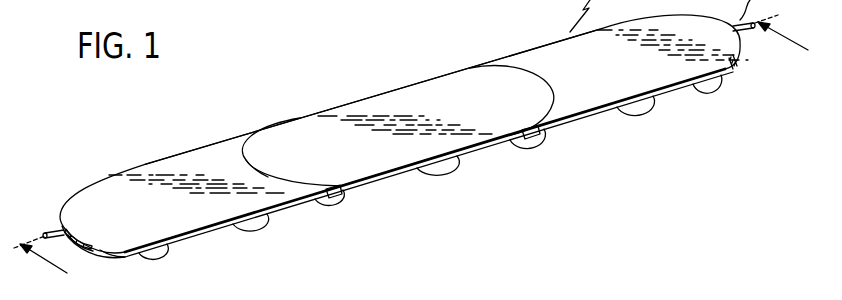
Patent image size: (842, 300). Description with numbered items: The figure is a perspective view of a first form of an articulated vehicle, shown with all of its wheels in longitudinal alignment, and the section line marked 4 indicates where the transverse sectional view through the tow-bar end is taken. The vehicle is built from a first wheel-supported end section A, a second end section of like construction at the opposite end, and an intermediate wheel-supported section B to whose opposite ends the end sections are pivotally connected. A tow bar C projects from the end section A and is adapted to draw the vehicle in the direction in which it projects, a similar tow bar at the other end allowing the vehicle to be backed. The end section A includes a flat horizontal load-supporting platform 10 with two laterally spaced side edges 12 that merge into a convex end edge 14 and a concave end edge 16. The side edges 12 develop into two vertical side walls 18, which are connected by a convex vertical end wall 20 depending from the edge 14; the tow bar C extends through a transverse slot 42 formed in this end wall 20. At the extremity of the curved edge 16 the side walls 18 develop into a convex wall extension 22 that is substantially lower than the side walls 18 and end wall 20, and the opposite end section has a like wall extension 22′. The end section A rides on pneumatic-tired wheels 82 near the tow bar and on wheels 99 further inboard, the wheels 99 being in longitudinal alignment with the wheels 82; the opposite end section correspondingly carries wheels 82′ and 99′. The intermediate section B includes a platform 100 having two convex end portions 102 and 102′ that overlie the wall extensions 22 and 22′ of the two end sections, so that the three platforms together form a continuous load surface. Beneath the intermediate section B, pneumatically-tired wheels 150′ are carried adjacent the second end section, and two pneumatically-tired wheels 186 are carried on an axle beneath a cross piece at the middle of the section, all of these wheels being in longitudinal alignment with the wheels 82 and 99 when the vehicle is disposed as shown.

The load-supporting platform 10 is at (161, 212).
The side edges 12 is at (150, 163).
The convex end edge 14 is at (80, 231).
The concave end edge 16 is at (244, 160).
The side walls 18 is at (197, 234).
The convex vertical end wall 20 is at (91, 249).
The convex wall extension 22 is at (330, 206).
The convex wall extension 22′ is at (533, 141).
The transverse slot 42 is at (92, 245).
The pneumatic-tired wheels 82 is at (160, 257).
The pneumatic-tired wheels 82′ is at (708, 97).
The wheels 99 is at (260, 225).
The wheels 99′ is at (634, 117).
The platform 100 is at (457, 119).
The convex end portion 102 is at (290, 172).
The convex end portion 102′ is at (532, 102).
The pneumatically-tired wheels 150′ is at (338, 195).
The pneumatically-tired wheels 186 is at (441, 176).
The first wheel-supported end section A is at (181, 154).
The intermediate wheel-supported section B is at (383, 94).
The tow bar C is at (52, 229).
The section line 4- 4 is at (411, 157).